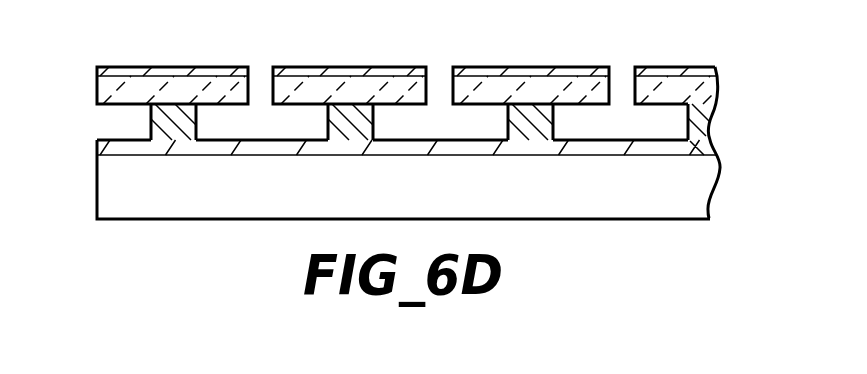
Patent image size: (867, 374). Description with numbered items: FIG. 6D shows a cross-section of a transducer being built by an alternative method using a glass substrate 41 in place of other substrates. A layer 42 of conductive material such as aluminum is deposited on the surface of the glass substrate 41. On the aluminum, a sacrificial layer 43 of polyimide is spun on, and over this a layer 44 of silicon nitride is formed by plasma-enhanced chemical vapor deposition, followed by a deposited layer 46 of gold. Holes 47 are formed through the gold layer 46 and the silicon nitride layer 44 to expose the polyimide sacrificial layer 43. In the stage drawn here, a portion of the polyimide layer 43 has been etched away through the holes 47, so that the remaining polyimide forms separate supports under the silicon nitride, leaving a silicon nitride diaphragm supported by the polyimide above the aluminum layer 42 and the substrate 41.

The substrate 41 is at (702, 187).
The layer of conductive material 42 is at (128, 152).
The sacrificial layer 43 is at (150, 122).
The layer of silicon nitride 44 is at (713, 88).
The layer of gold 46 is at (375, 70).
The holes 47 is at (260, 87).